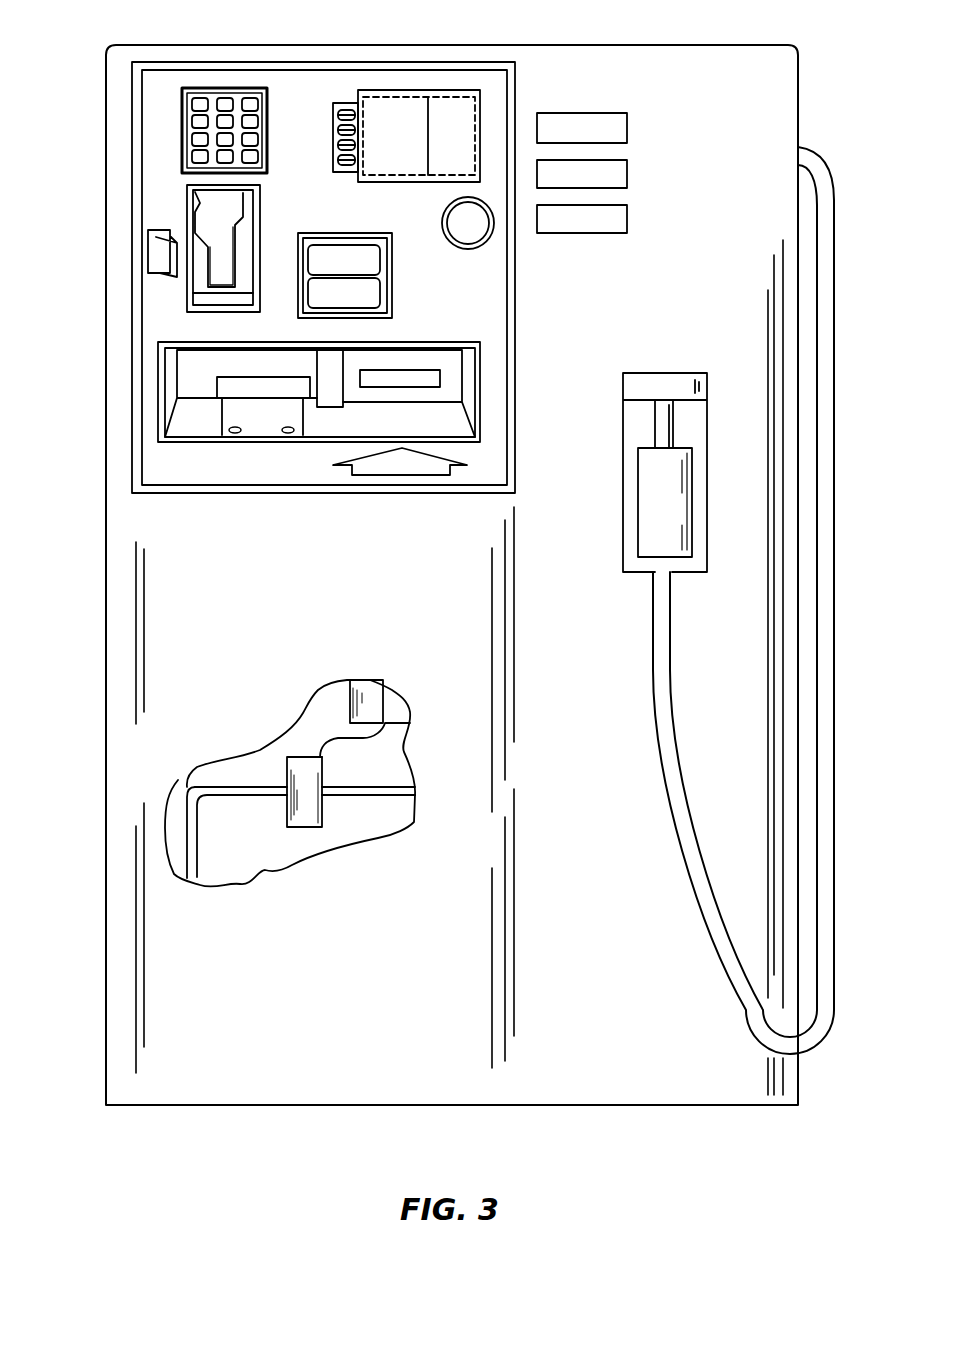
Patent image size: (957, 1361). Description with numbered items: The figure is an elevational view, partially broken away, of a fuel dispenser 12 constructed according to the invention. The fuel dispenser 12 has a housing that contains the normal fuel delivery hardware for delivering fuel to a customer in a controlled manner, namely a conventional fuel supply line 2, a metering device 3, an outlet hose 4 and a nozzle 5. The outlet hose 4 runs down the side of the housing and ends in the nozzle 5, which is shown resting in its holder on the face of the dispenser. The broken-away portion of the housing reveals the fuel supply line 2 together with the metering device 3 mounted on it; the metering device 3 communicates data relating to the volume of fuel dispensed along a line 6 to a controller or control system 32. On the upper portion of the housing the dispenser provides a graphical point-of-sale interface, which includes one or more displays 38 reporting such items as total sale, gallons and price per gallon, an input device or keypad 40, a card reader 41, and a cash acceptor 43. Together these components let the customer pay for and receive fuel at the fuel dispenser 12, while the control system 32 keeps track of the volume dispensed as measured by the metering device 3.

The fuel dispenser 12 is at (295, 45).
The display 38 is at (425, 92).
The keypad 40 is at (183, 153).
The card reader 41 is at (187, 290).
The cash acceptor 43 is at (160, 377).
The nozzle 5 is at (673, 517).
The outlet hose 4 is at (803, 1043).
The fuel supply line 2 is at (188, 805).
The line 6 is at (350, 733).
The control system 32 is at (382, 703).
The metering device 3 is at (305, 785).